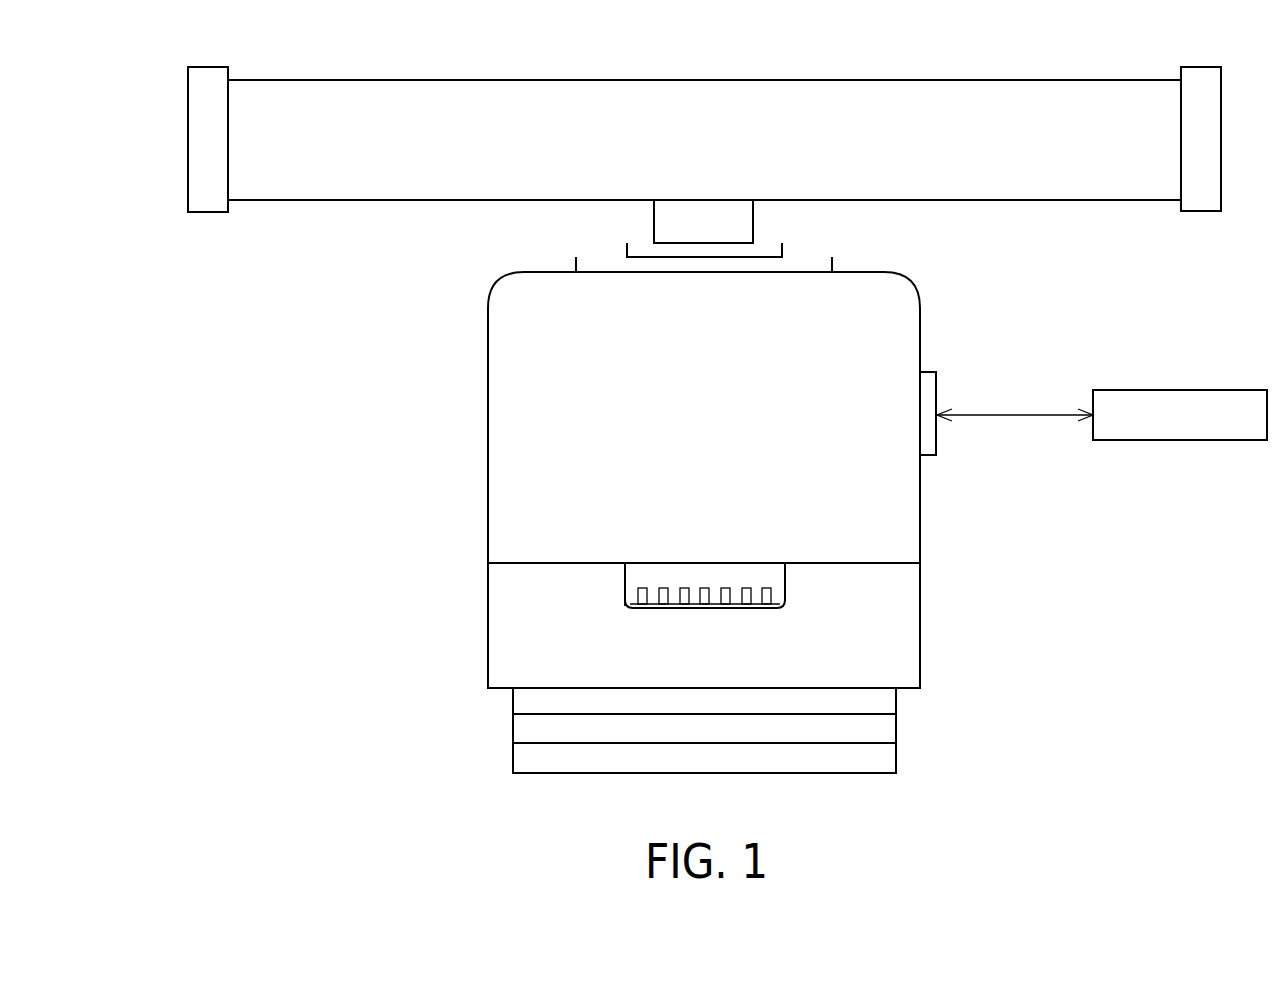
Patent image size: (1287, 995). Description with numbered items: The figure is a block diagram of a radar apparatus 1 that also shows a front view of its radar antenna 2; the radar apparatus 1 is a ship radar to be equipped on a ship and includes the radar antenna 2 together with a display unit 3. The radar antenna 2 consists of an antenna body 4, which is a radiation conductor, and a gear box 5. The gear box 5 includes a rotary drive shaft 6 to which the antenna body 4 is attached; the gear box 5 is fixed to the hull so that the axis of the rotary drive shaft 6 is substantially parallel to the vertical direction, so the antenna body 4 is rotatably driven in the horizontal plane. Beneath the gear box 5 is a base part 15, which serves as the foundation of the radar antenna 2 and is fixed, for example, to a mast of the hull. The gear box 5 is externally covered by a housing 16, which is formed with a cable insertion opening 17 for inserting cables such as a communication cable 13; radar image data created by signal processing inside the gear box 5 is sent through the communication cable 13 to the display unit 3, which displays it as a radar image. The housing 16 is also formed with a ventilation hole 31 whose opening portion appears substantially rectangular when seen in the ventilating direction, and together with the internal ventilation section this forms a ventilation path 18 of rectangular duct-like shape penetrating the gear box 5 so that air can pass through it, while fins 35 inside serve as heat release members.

The radar apparatus 1 is at (1148, 690).
The radar antenna 2 is at (327, 307).
The display unit 3 is at (1167, 390).
The antenna body 4 is at (1090, 188).
The gear box 5 is at (445, 455).
The rotary drive shaft 6 is at (746, 222).
The communication cable 13 is at (1023, 413).
The base part 15 is at (885, 762).
The housing 16 is at (500, 325).
The cable insertion opening 17 is at (928, 457).
The ventilation path 18 is at (625, 580).
The ventilation hole 31 is at (783, 580).
The fins 35 is at (684, 588).